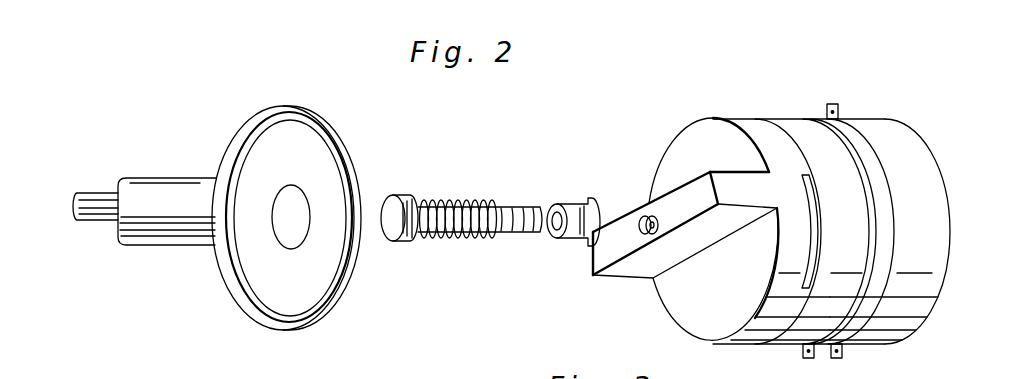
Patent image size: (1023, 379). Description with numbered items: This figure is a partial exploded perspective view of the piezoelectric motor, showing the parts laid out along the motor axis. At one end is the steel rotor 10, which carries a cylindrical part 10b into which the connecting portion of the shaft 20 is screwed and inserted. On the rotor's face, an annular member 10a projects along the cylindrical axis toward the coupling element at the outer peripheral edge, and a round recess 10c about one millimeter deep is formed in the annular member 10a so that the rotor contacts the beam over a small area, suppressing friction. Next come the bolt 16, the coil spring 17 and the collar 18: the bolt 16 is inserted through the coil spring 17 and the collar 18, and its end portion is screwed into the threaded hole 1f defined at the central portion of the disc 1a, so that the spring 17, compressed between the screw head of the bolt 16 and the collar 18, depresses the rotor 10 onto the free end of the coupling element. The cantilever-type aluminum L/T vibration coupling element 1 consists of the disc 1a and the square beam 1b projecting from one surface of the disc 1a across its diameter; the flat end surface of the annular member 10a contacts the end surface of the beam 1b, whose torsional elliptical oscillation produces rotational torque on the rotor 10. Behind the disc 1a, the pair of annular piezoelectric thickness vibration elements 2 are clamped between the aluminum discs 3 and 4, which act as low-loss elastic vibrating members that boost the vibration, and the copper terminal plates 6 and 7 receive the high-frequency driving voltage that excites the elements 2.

The ultrasonic longitudinal/torsional vibration coupling element 1 is at (680, 187).
The disc 1a is at (703, 133).
The beam 1b is at (679, 174).
The threaded hole 1f is at (643, 220).
The piezoelectric thickness vibration elements 2 is at (870, 155).
The aluminum disc 3 is at (803, 130).
The aluminum disc 4 is at (917, 150).
The terminal plate 6 is at (832, 104).
The terminal plate 7 is at (805, 353).
The rotor 10 is at (287, 200).
The annular member 10a is at (328, 133).
The cylindrical part 10b is at (168, 185).
The round recess 10c is at (282, 283).
The bolt 16 is at (407, 241).
The coil spring 17 is at (455, 240).
The collar 18 is at (555, 242).
The shaft 20 is at (93, 197).